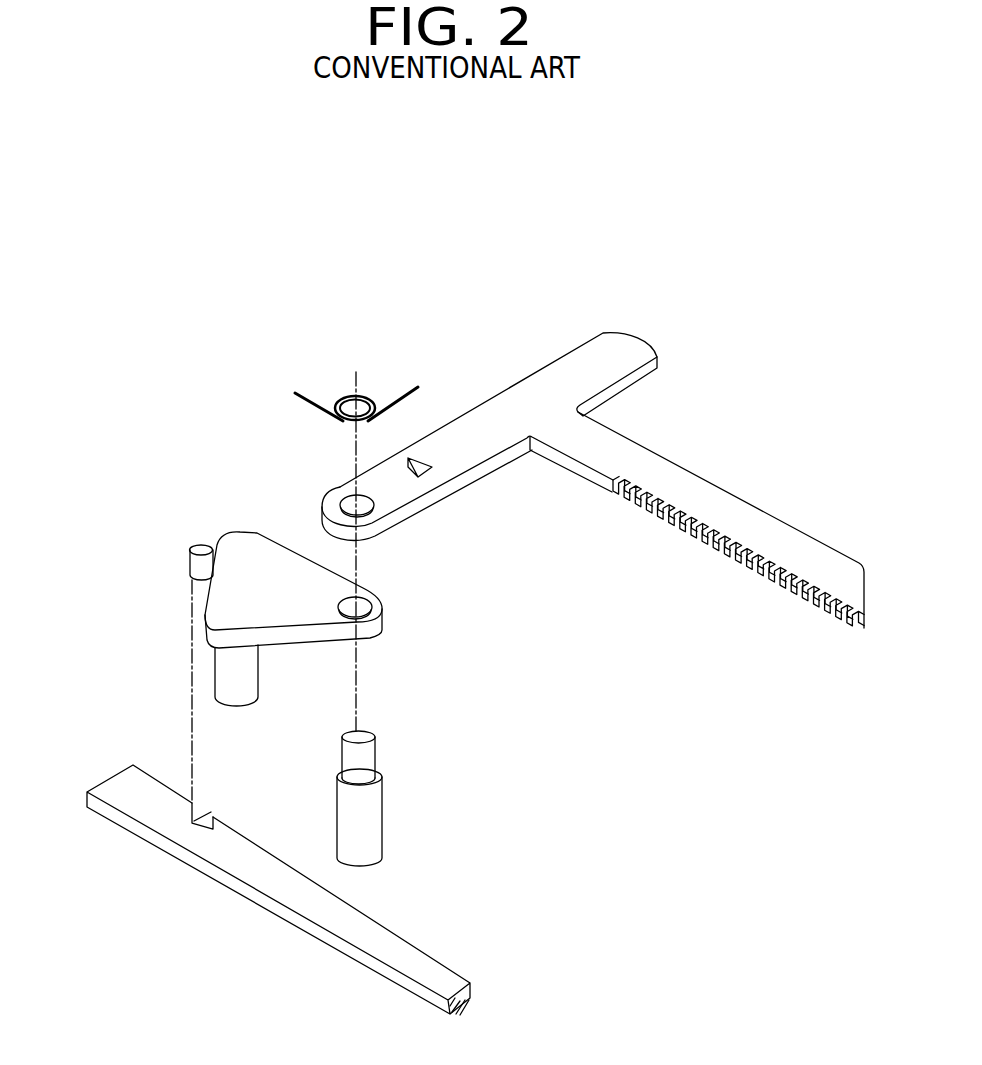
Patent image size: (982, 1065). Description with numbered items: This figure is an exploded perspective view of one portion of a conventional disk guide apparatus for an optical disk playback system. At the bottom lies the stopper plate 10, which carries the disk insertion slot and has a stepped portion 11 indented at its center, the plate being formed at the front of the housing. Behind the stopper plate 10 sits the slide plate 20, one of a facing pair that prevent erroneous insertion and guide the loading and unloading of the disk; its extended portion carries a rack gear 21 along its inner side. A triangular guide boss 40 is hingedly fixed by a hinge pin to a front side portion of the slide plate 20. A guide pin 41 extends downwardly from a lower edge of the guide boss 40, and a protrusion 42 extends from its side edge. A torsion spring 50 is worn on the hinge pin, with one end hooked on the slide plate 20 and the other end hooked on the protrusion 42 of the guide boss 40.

The stopper plate 10 is at (120, 778).
The stepped portion 11 is at (208, 822).
The slide plate 20 is at (553, 368).
The rack gear 21 is at (778, 578).
The triangular guide boss 40 is at (236, 540).
The guide pin 41 is at (220, 672).
The protrusion 42 is at (199, 549).
The torsion spring 50 is at (352, 400).